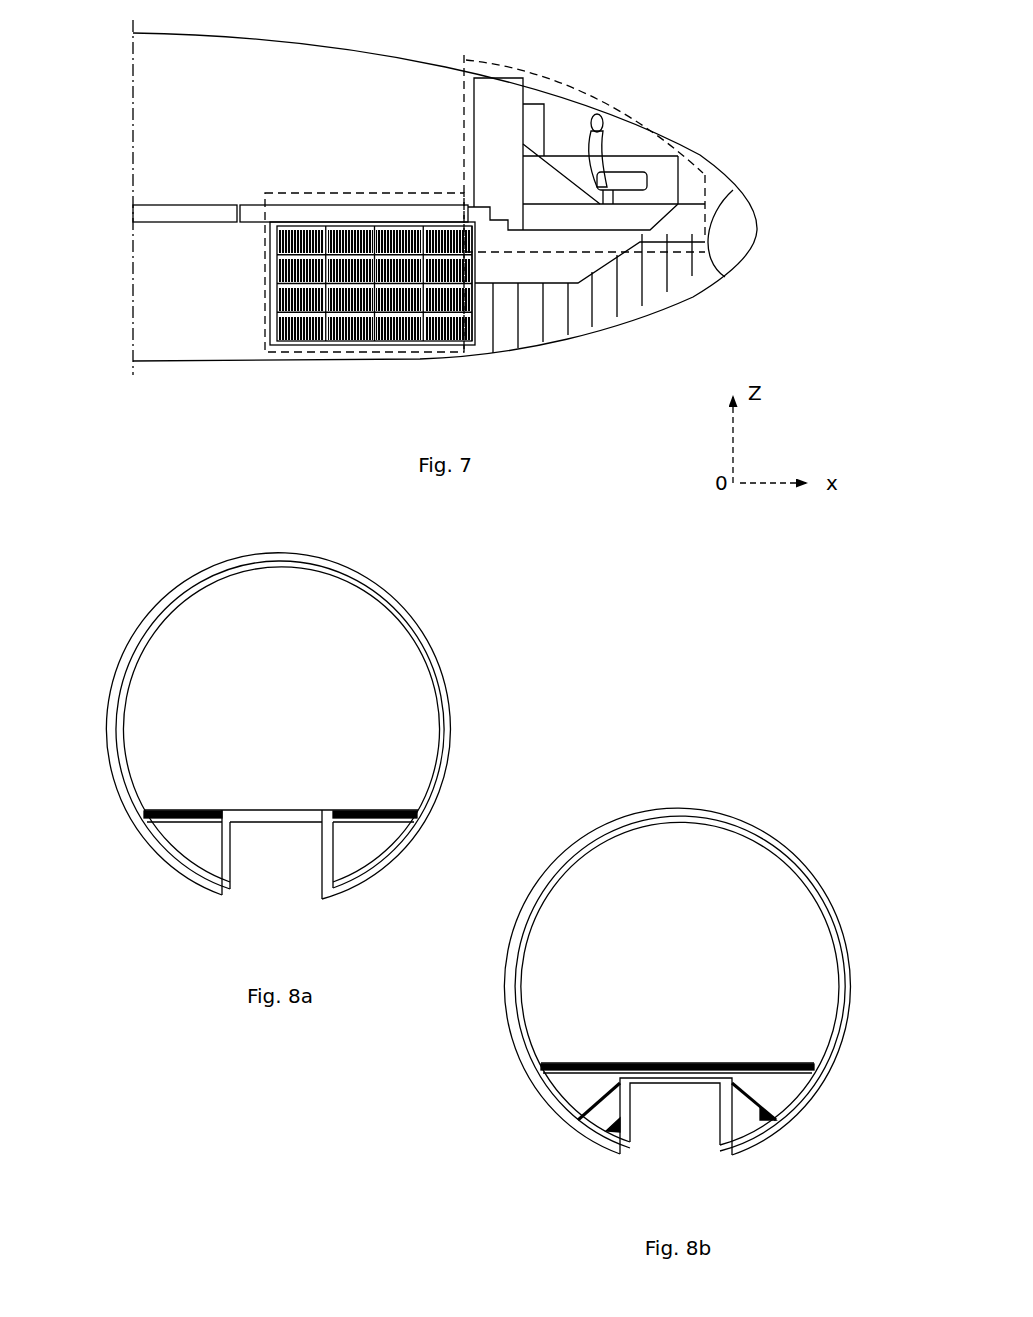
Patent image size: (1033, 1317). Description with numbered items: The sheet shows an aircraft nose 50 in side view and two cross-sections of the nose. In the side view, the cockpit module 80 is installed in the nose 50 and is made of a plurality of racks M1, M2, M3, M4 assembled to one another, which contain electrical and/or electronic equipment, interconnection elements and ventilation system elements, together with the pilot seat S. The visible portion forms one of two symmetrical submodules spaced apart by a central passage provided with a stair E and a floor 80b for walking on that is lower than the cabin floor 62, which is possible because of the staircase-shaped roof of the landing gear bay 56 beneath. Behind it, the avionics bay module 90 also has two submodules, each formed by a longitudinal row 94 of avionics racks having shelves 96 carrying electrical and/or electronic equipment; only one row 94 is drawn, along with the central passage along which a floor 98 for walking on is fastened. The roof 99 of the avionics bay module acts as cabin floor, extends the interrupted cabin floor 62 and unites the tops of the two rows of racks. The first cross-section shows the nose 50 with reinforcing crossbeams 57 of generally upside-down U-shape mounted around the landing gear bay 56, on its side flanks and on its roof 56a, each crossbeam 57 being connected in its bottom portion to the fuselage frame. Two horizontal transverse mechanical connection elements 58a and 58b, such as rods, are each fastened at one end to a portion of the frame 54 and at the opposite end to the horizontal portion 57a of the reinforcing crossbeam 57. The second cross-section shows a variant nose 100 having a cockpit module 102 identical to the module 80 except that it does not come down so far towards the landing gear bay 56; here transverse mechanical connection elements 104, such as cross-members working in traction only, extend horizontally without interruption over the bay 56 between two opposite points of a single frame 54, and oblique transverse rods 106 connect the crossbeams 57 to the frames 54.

In FIG. 7, the aircraft nose 50 is at (728, 164).
In FIG. 8A, the aircraft nose 50 is at (404, 586).
In FIG. 8A, the frame 54 is at (112, 711).
In FIG. 8B, the frame 54 is at (510, 965).
In FIG. 7, the landing gear bay 56 is at (580, 307).
In FIG. 8A, the landing gear bay 56 is at (277, 888).
In FIG. 8B, the landing gear bay 56 is at (677, 1138).
In FIG. 8A, the roof of the landing gear bay 56a is at (246, 808).
In FIG. 8B, the roof of the landing gear bay 56a is at (638, 1072).
In FIG. 8A, the reinforcing crossbeam 57 is at (222, 868).
In FIG. 8B, the reinforcing crossbeam 57 is at (606, 1135).
In FIG. 8A, the horizontal portion of the reinforcing crossbeam 57a is at (306, 808).
In FIG. 8A, the horizontal transverse mechanical connection element 58a is at (171, 810).
In FIG. 8A, the horizontal transverse mechanical connection element 58b is at (378, 810).
In FIG. 7, the cabin floor 62 is at (162, 213).
In FIG. 7, the cockpit module 80 is at (600, 262).
In FIG. 8A, the cockpit module 80 is at (250, 692).
In FIG. 7, the floor for walking on 80b is at (627, 230).
In FIG. 7, the avionics bay module 90 is at (268, 352).
In FIG. 7, the longitudinal row of avionics racks 94 is at (264, 263).
In FIG. 7, the shelves 96 is at (436, 295).
In FIG. 7, the floor for walking on 98 is at (432, 347).
In FIG. 7, the roof of the avionics bay module 99 is at (298, 213).
In FIG. 8B, the nose 100 is at (752, 806).
In FIG. 8B, the cockpit module 102 is at (640, 940).
In FIG. 8B, the transverse mechanical connection elements 104 is at (665, 1063).
In FIG. 8B, the oblique transverse rods 106 is at (592, 1098).
In FIG. 7, the stair E is at (496, 220).
In FIG. 7, the rack M1 is at (499, 104).
In FIG. 7, the rack M2 is at (537, 118).
In FIG. 7, the rack M3 is at (553, 182).
In FIG. 7, the rack M4 is at (657, 167).
In FIG. 7, the pilot seat S is at (603, 145).